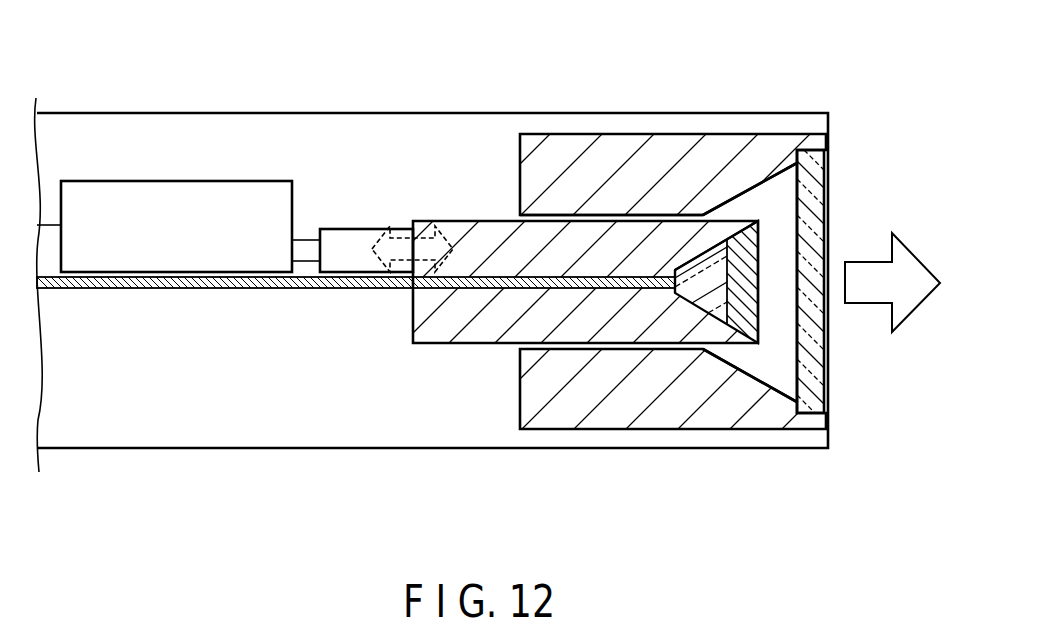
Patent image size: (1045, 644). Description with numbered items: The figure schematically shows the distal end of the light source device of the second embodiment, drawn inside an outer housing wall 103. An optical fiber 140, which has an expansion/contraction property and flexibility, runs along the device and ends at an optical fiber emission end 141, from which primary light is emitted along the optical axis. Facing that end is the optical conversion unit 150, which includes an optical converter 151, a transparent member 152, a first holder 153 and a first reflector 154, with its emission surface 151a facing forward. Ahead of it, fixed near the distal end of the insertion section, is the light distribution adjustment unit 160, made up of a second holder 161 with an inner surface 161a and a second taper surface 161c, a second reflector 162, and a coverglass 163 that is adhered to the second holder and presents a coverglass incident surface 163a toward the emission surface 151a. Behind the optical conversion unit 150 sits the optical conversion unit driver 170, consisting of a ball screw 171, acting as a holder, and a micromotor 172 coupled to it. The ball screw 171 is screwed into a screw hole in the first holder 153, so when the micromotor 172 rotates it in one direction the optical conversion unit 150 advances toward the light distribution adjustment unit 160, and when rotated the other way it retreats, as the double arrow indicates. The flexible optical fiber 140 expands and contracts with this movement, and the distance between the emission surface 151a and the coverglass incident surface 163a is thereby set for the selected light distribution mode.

The housing 103 is at (87, 112).
The optical fiber 140 is at (93, 289).
The optical fiber emission end 141 is at (665, 293).
The optical conversion unit 150 is at (488, 498).
The optical converter 151 is at (740, 292).
The emission surface 151a is at (760, 248).
The transparent member 152 is at (686, 300).
The first holder 153 is at (512, 335).
The first reflector 154 is at (678, 297).
The light distribution adjustment unit 160 is at (838, 66).
The second holder 161 is at (580, 142).
The inner surface of frame 161a is at (647, 213).
The second reflector 162 is at (722, 187).
The second taper surface 161c is at (768, 177).
The coverglass 163 is at (817, 152).
The coverglass incident surface 163a is at (795, 312).
The optical conversion unit driver 170 is at (248, 66).
The ball screw 171 is at (345, 228).
The micromotor 172 is at (272, 180).